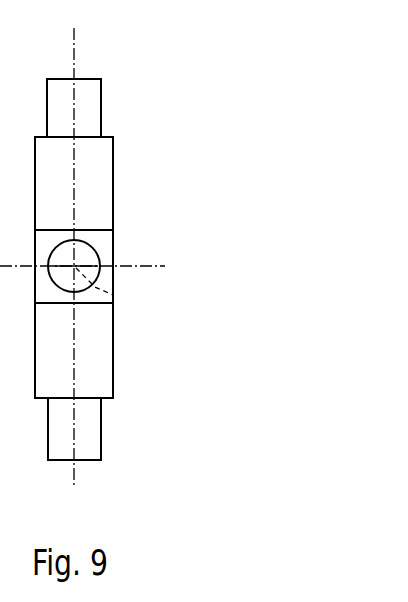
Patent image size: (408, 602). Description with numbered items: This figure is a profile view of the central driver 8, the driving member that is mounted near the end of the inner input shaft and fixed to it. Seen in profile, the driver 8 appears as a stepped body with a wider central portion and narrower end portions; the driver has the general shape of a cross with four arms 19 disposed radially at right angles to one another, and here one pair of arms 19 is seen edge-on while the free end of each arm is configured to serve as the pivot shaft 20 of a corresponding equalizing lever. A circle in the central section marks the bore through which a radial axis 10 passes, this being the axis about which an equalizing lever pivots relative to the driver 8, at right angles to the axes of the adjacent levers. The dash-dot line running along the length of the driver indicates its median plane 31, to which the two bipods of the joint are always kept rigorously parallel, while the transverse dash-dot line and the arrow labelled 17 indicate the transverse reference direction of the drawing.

The driving member 8 is at (114, 178).
The radial axis 10 is at (113, 295).
The axis of rotation 17 is at (173, 264).
The arm 19 is at (113, 377).
The pivot shaft 20 is at (80, 260).
The median plane 31 is at (74, 50).